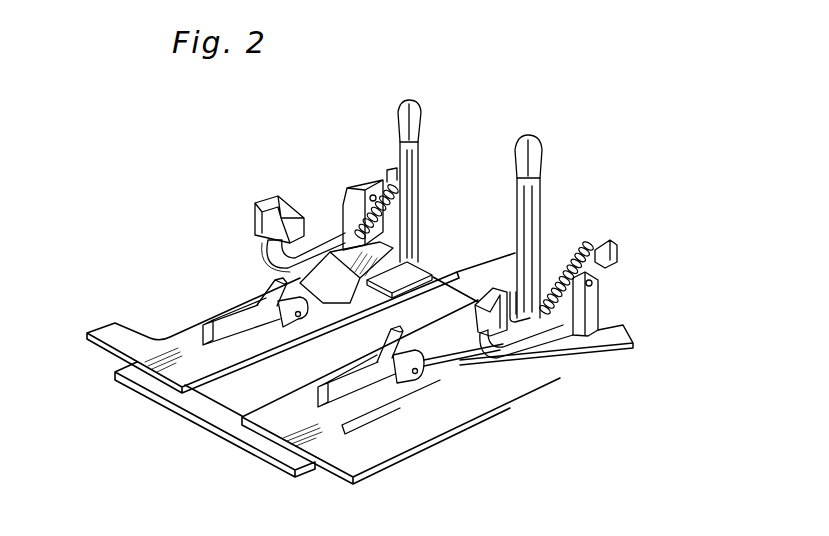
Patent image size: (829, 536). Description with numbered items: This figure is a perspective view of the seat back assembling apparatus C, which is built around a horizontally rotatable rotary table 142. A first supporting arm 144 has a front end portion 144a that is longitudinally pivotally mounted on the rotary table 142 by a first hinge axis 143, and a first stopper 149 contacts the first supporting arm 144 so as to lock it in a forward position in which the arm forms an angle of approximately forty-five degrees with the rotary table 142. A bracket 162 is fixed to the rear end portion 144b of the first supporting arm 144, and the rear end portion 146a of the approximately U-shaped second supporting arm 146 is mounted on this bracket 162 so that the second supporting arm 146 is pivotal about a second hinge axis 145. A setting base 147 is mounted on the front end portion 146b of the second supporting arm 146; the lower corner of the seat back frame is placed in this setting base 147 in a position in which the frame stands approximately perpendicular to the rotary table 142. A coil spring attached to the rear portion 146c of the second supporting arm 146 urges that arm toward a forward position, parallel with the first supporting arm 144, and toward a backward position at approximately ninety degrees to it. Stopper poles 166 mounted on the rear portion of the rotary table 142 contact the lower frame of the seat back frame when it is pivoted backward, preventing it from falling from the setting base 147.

The rotary table 142 is at (362, 478).
The seat back assembling apparatus C is at (97, 322).
The first supporting arm 144 is at (462, 380).
The front end portion of the first supporting arm 144a is at (468, 346).
The rear end portion of the first supporting arm 144b is at (636, 340).
The first stopper 149 is at (262, 291).
The first hinge axis 143 is at (297, 328).
The second hinge axis 145 is at (365, 187).
The second supporting arm 146 is at (323, 237).
The rear end portion of the second supporting arm 146a is at (570, 265).
The front end portion of the second supporting arm 146b is at (266, 250).
The rear portion of the second supporting arm 146c is at (612, 245).
The setting base 147 is at (248, 196).
The bracket 162 is at (374, 187).
The stopper poles 166 is at (415, 113).